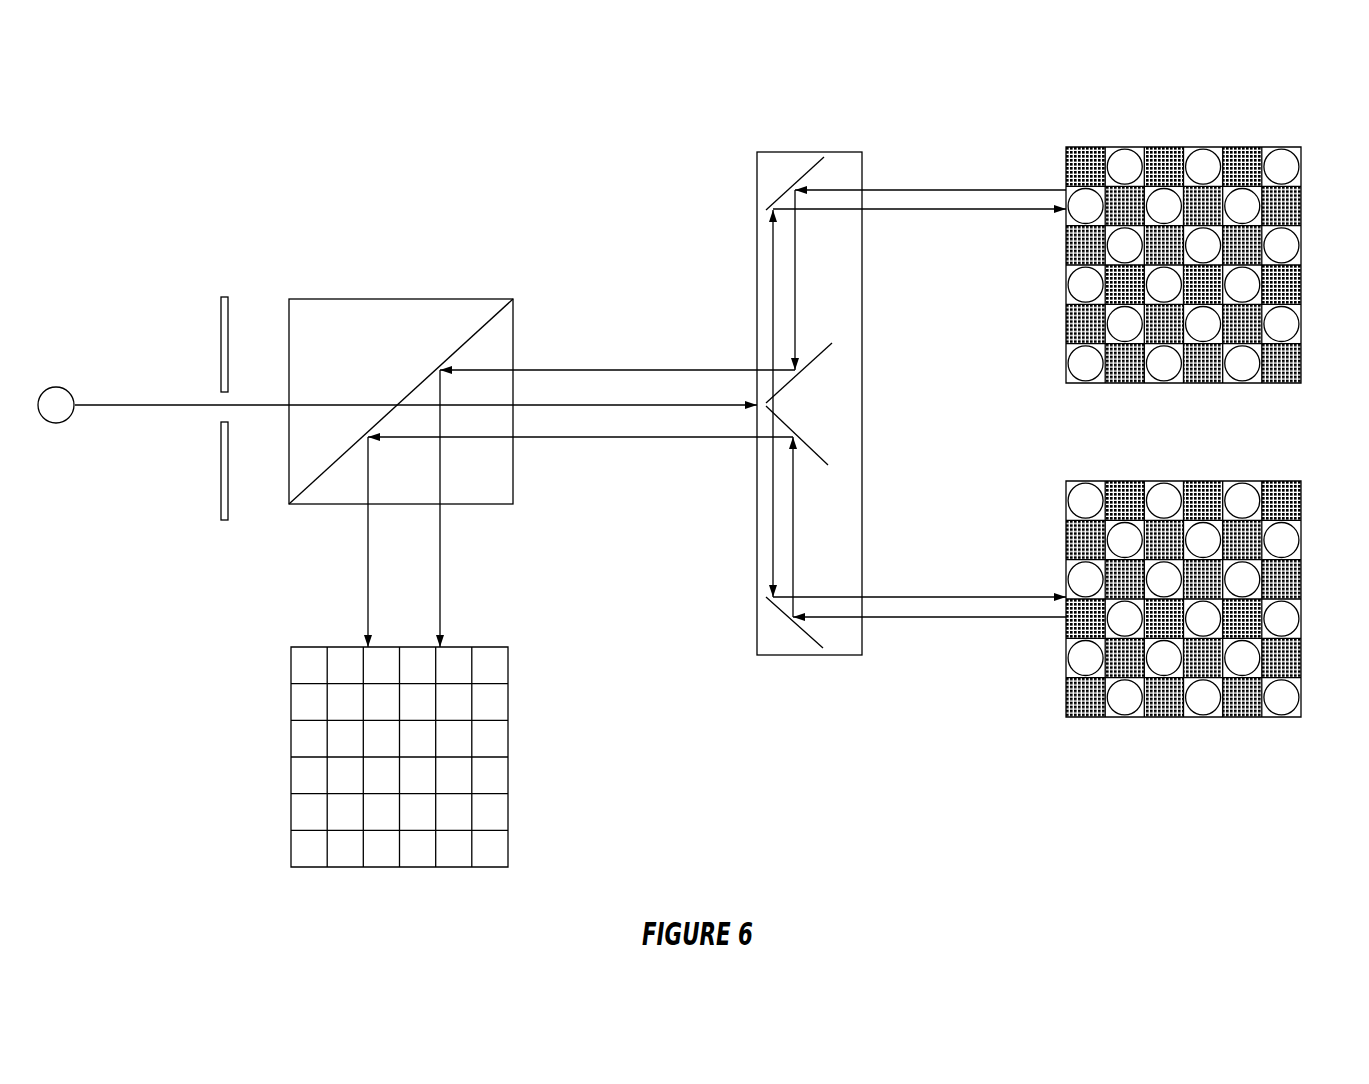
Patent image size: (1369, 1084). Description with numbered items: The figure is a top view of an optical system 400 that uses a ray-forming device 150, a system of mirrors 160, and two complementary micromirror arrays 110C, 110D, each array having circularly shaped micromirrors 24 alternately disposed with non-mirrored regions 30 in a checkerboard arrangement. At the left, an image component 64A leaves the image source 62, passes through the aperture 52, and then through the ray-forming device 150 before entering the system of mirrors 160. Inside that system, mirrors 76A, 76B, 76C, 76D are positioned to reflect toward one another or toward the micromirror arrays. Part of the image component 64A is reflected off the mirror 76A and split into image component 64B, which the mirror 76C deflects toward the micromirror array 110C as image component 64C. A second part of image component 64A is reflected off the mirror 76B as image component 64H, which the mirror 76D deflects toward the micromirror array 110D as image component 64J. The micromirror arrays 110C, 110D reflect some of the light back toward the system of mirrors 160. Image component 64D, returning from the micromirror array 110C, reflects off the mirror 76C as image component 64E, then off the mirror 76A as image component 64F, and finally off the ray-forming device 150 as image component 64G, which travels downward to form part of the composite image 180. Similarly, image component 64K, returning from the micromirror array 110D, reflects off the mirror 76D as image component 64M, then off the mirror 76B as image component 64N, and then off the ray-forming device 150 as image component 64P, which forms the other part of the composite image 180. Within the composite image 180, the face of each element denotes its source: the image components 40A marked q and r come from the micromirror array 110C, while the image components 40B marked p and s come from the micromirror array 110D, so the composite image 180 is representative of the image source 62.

The image source 62 is at (56, 405).
The aperture 52 is at (222, 398).
The image component 64A is at (155, 410).
The ray-forming device 150 is at (401, 401).
The image component 64F is at (632, 367).
The image component 64N is at (632, 441).
The image component 64P is at (363, 555).
The image component 64G is at (445, 555).
The composite image 180 is at (291, 745).
The image components (q and r) 40A is at (512, 734).
The image components (p and s) 40B is at (512, 845).
The system of mirrors 160 is at (809, 387).
The mirror 76C is at (785, 196).
The mirror 76A is at (808, 367).
The mirror 76B is at (808, 443).
The mirror 76D is at (782, 608).
The image component 64B is at (770, 277).
The image component 64C is at (928, 212).
The image component 64D is at (965, 185).
The image component 64E is at (797, 307).
The image component 64H is at (770, 526).
The image component 64J is at (928, 593).
The image component 64K is at (965, 625).
The image component 64M is at (797, 560).
The optical system 400 is at (1022, 100).
The micromirror array 110C is at (1148, 147).
The micromirror array 110D is at (1147, 481).
The micromirrors 24 is at (1205, 140).
The non-mirrored regions 30 is at (1302, 283).